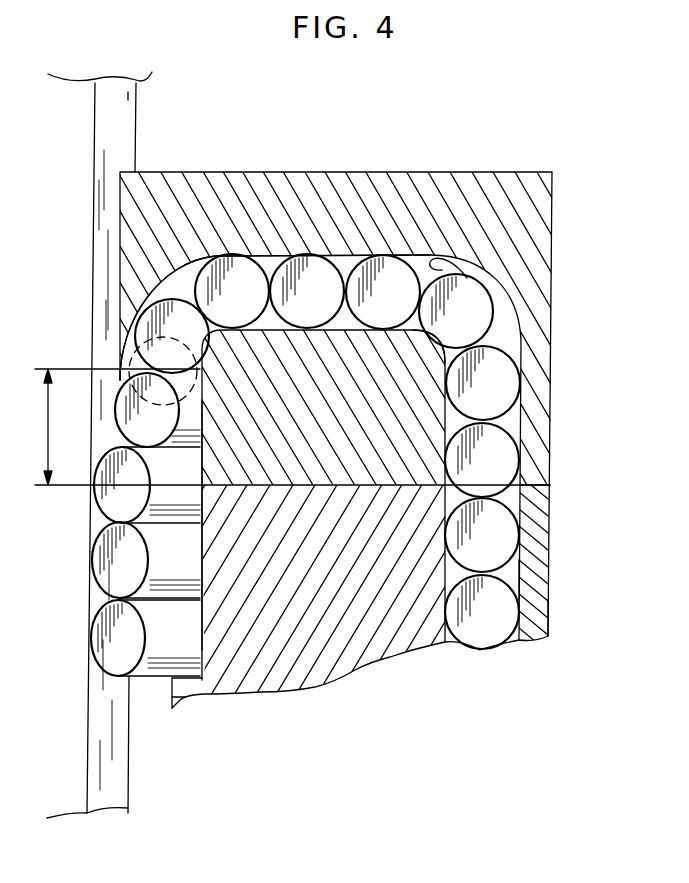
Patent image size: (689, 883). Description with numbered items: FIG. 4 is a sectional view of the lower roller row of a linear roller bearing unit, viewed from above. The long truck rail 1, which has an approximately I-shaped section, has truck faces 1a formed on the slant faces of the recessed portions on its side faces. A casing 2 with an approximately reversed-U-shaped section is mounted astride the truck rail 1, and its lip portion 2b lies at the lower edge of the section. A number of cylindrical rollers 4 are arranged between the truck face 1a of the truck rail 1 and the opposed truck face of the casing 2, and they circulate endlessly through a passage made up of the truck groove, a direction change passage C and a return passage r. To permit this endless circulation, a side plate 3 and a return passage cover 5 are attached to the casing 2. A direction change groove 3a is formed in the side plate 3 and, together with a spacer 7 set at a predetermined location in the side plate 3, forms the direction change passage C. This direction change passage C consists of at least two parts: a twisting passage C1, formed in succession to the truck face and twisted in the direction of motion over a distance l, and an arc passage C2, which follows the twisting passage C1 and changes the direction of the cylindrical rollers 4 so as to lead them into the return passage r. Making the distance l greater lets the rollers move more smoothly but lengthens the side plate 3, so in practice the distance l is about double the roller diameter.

The truck rail 1 is at (135, 797).
The truck face 1a is at (132, 102).
The casing 2 is at (390, 653).
The lip of slider 2b is at (187, 692).
The side plate 3 is at (494, 168).
The direction change groove 3a is at (447, 270).
The cylindrical roller 4 is at (262, 262).
The return passage cover 5 is at (531, 645).
The spacer 7 is at (427, 398).
The direction change passage C is at (348, 262).
The twisting passage C1 is at (203, 452).
The arc passage C2 is at (186, 265).
The return passage r is at (510, 573).
The distance of twisting l is at (117, 427).